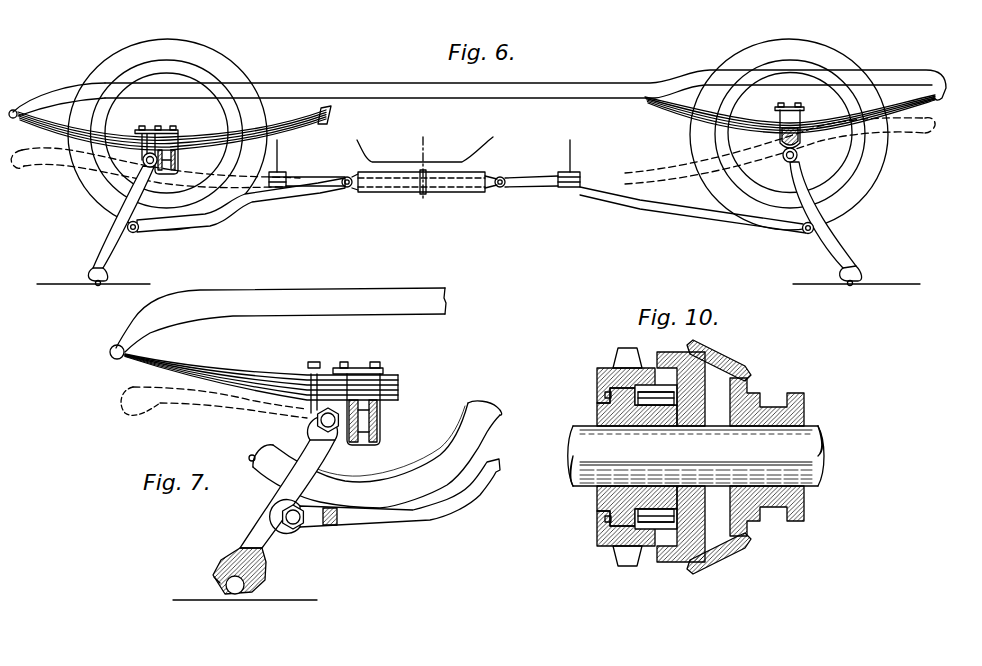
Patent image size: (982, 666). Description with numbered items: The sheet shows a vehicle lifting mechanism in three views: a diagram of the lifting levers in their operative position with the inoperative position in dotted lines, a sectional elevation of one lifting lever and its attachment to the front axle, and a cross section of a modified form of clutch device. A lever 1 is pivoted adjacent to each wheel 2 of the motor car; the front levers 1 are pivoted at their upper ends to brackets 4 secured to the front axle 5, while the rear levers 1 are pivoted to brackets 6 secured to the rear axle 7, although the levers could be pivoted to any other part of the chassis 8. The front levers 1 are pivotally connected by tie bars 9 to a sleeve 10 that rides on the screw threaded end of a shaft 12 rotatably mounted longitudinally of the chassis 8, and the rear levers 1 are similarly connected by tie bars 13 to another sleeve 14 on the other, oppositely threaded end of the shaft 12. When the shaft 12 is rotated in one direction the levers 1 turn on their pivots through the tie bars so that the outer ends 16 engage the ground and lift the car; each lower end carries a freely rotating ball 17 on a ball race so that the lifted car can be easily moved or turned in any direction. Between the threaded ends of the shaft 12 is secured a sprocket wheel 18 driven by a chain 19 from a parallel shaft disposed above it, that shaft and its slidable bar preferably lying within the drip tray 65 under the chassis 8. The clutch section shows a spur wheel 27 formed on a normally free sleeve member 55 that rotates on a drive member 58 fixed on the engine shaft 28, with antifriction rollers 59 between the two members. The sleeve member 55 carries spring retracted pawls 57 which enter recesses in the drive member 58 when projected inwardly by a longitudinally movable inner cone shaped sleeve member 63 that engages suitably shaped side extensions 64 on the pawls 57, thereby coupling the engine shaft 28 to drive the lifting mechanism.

In FIG. 6, the lever 1 is at (106, 248).
In FIG. 7, the lever 1 is at (218, 410).
In FIG. 6, the wheel 2 is at (104, 190).
In FIG. 7, the wheel 2 is at (368, 490).
In FIG. 6, the bracket 4 is at (148, 156).
In FIG. 7, the bracket 4 is at (318, 412).
In FIG. 6, the front axle 5 is at (172, 152).
In FIG. 7, the front axle 5 is at (378, 430).
In FIG. 6, the bracket 6 is at (780, 149).
In FIG. 6, the rear axle 7 is at (800, 124).
In FIG. 6, the chassis 8 is at (616, 94).
In FIG. 7, the chassis 8 is at (281, 318).
In FIG. 6, the tie bar 9 is at (217, 178).
In FIG. 7, the tie bar 9 is at (422, 522).
In FIG. 6, the sleeve 10 is at (311, 176).
In FIG. 6, the shaft 12 is at (400, 190).
In FIG. 6, the tie bar 13 is at (645, 180).
In FIG. 6, the sleeve 14 is at (498, 178).
In FIG. 6, the outer end of lever 16 is at (102, 274).
In FIG. 7, the outer end of lever 16 is at (252, 578).
In FIG. 6, the ball 17 is at (99, 286).
In FIG. 7, the ball 17 is at (244, 589).
In FIG. 6, the sprocket wheel 18 is at (426, 190).
In FIG. 7, the sprocket wheel 18 is at (214, 577).
In FIG. 6, the chain 19 is at (421, 138).
In FIG. 10, the spur wheel 27 is at (614, 357).
In FIG. 10, the engine shaft 28 is at (696, 456).
In FIG. 10, the sleeve member 55 is at (598, 377).
In FIG. 10, the pawl 57 is at (705, 386).
In FIG. 10, the drive member 58 is at (693, 420).
In FIG. 10, the roller 59 is at (652, 512).
In FIG. 10, the cone shaped sleeve member 63 is at (735, 361).
In FIG. 10, the side extension 64 is at (746, 384).
In FIG. 6, the drip tray 65 is at (466, 170).